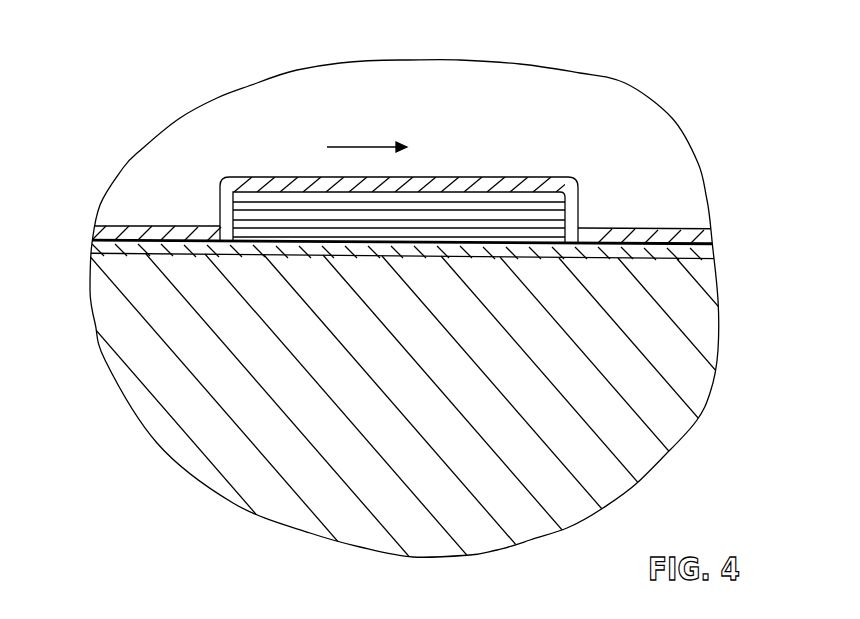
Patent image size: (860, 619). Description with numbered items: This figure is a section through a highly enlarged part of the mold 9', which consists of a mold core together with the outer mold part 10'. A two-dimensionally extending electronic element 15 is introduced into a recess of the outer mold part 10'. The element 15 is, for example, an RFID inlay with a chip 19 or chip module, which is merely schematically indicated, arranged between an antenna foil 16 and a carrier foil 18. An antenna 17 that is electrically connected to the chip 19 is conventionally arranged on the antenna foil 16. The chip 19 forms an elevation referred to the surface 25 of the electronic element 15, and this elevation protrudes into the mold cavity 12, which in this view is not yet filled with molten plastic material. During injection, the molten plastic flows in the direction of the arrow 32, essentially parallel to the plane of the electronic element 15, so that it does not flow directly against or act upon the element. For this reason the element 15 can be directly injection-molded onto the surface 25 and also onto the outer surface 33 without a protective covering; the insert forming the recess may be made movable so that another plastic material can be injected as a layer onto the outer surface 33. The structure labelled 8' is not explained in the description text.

The outer mold part 10' is at (430, 320).
The surface 25 is at (173, 214).
The carrier foil 18 is at (685, 237).
The antenna 17 is at (708, 246).
The antenna foil 16 is at (665, 258).
The two-dimensionally extending electronic element 15 is at (579, 195).
The chip 19 is at (532, 215).
The mold cavity 12 is at (520, 105).
The arrow 32 is at (355, 147).
The mold 9' is at (704, 160).
The structure 8' is at (745, 188).
The outer surface 33 is at (180, 255).